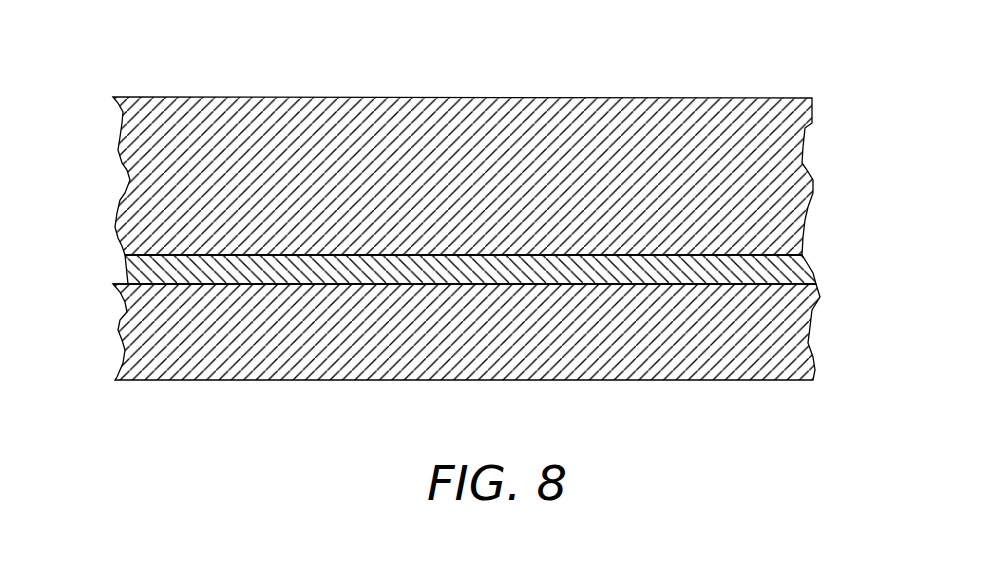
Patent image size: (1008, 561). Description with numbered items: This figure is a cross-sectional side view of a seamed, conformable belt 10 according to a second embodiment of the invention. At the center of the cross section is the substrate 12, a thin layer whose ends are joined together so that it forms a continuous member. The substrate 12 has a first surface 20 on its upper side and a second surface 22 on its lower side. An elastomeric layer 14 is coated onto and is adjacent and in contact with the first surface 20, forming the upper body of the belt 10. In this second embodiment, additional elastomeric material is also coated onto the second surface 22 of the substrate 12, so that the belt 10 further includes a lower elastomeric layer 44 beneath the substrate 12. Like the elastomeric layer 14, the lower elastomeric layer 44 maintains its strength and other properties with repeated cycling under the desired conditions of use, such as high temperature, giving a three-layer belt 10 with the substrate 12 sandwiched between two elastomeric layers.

The belt 10 is at (458, 222).
The substrate 12 is at (130, 270).
The elastomeric layer 14 is at (793, 192).
The first surface 20 is at (673, 252).
The second surface 22 is at (618, 286).
The lower elastomeric layer 44 is at (802, 355).